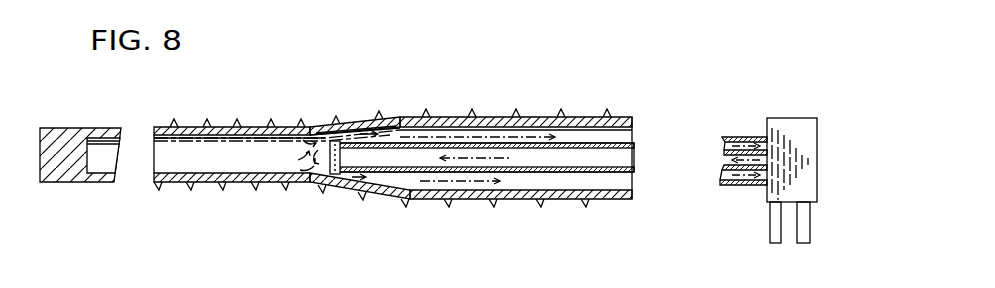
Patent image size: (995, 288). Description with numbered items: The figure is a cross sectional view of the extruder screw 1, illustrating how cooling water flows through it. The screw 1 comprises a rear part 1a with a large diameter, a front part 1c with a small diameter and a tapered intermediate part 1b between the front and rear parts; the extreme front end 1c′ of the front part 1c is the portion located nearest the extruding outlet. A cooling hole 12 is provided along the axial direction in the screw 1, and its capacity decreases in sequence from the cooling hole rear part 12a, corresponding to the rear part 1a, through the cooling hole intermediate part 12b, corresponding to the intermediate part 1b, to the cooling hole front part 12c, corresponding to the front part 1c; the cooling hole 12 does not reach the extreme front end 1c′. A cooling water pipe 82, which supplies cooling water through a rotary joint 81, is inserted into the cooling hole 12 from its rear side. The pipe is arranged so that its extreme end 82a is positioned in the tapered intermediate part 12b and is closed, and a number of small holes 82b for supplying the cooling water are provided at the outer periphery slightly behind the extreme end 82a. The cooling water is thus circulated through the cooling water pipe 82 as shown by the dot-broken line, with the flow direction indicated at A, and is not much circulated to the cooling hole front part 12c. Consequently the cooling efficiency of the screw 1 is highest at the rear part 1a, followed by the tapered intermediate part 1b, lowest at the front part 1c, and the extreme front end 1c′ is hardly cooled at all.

The screw 1 is at (632, 118).
The rear part 1a is at (547, 122).
The tapered intermediate part 1b is at (358, 127).
The front part 1c is at (197, 128).
The extreme front end 1c′ is at (38, 133).
The cooling hole 12 is at (214, 168).
The cooling hole rear part 12a is at (500, 116).
The cooling hole intermediate part 12b is at (318, 132).
The cooling hole front part 12c is at (253, 128).
The rotary joint 81 is at (790, 125).
The cooling water pipe 82 is at (457, 172).
The extreme end 82a is at (306, 168).
The small holes 82b is at (348, 158).
The flow direction A is at (477, 200).